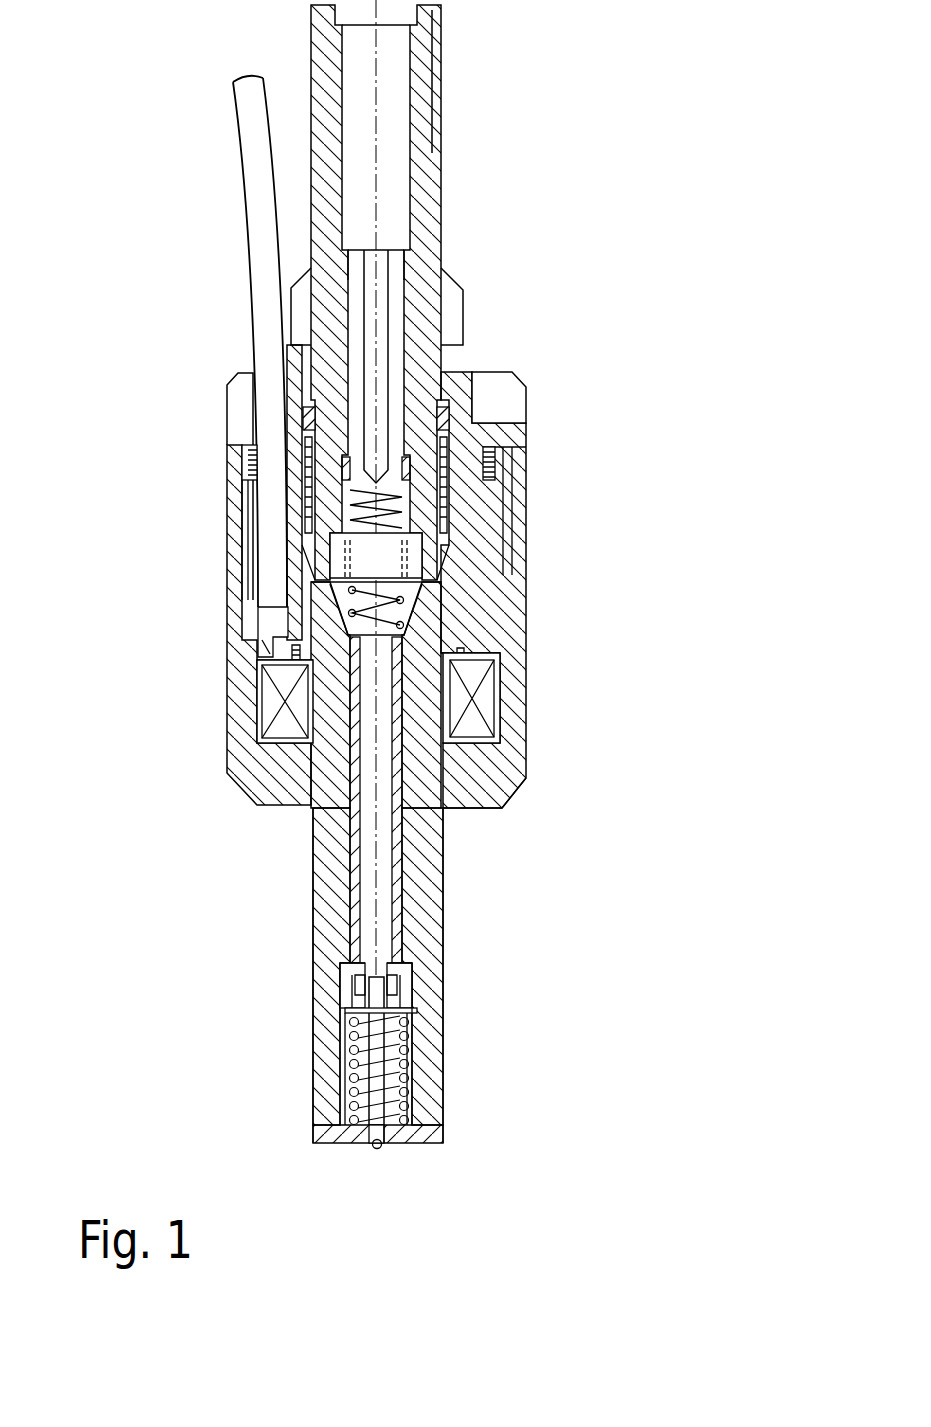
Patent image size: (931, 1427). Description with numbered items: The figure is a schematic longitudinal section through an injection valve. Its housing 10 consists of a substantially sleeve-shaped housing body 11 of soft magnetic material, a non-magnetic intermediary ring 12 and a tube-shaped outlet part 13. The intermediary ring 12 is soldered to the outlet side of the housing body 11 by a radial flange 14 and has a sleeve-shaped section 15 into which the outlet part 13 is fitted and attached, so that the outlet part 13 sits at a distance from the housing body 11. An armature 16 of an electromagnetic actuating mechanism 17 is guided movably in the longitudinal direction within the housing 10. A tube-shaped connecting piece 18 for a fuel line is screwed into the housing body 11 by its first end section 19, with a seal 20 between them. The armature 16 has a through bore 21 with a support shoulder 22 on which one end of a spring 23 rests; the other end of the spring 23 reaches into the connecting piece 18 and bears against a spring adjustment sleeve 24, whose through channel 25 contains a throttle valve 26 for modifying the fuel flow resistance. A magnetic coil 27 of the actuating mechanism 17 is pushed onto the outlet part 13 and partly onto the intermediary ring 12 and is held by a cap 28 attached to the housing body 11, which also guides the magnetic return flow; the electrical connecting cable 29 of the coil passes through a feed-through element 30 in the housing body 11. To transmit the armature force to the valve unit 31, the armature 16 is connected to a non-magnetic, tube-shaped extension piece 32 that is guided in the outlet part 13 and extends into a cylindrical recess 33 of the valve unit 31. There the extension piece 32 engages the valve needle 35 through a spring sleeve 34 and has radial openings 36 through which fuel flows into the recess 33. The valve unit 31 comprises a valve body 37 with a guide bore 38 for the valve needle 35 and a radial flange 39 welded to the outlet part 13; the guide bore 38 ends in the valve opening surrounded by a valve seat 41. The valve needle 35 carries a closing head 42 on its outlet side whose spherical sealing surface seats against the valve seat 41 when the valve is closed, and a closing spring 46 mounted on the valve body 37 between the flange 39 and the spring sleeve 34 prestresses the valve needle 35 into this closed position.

The housing 10 is at (300, 821).
The housing body 11 is at (470, 612).
The intermediary ring 12 is at (518, 638).
The outlet part 13 is at (332, 917).
The radial flange 14 is at (258, 633).
The sleeve-shaped section 15 is at (275, 660).
The armature 16 is at (265, 628).
The electromagnetic actuating mechanism 17 is at (246, 700).
The connecting piece 18 is at (421, 213).
The first end section 19 is at (453, 448).
The seal 20 is at (443, 418).
The through bore 21 is at (435, 593).
The support shoulder 22 is at (330, 633).
The spring 23 is at (400, 515).
The spring adjustment sleeve 24 is at (407, 350).
The through channel 25 is at (372, 326).
The throttle valve 26 is at (355, 500).
The magnetic coil 27 is at (483, 693).
The cap 28 is at (502, 773).
The electrical connecting cable 29 is at (262, 190).
The feed-through element 30 is at (245, 410).
The valve unit 31 is at (326, 1047).
The extension piece 32 is at (352, 795).
The cylindrical recess 33 is at (343, 982).
The spring sleeve 34 is at (410, 1012).
The valve needle 35 is at (395, 1052).
The radial openings 36 is at (393, 967).
The valve body 37 is at (340, 1097).
The guide bore 38 is at (378, 1143).
The radial flange 39 is at (318, 1143).
The valve seat 41 is at (390, 1143).
The closing head 42 is at (378, 1143).
The closing spring 46 is at (395, 1073).